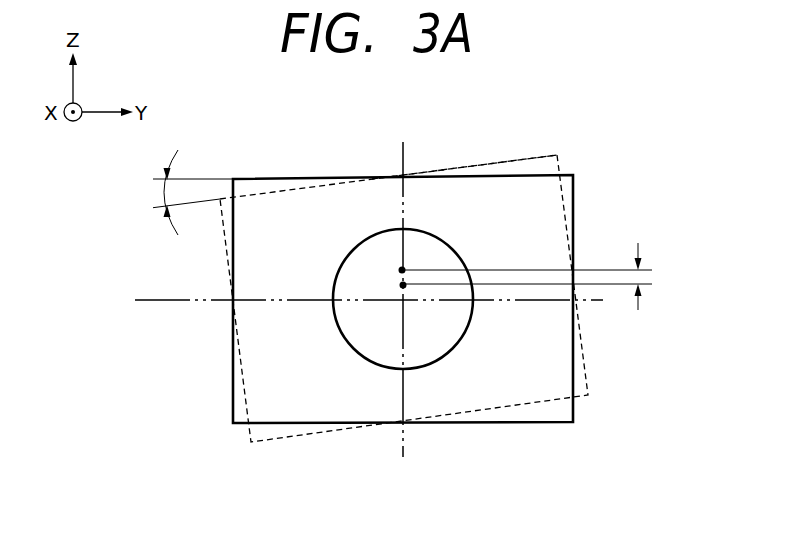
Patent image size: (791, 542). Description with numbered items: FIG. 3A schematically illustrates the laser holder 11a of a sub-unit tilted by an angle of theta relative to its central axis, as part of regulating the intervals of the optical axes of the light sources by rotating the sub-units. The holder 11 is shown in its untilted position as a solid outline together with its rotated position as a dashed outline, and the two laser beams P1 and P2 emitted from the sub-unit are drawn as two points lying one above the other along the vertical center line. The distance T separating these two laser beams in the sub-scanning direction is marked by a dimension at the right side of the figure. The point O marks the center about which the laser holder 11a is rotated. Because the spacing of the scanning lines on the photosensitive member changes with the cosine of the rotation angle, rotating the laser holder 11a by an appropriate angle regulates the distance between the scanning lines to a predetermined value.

The plate / substrate (positions P1 and P2) 11 is at (402, 270).
The laser holder 11a is at (535, 187).
The distance separating the two laser beams T is at (642, 275).
The center of rotation O is at (400, 304).